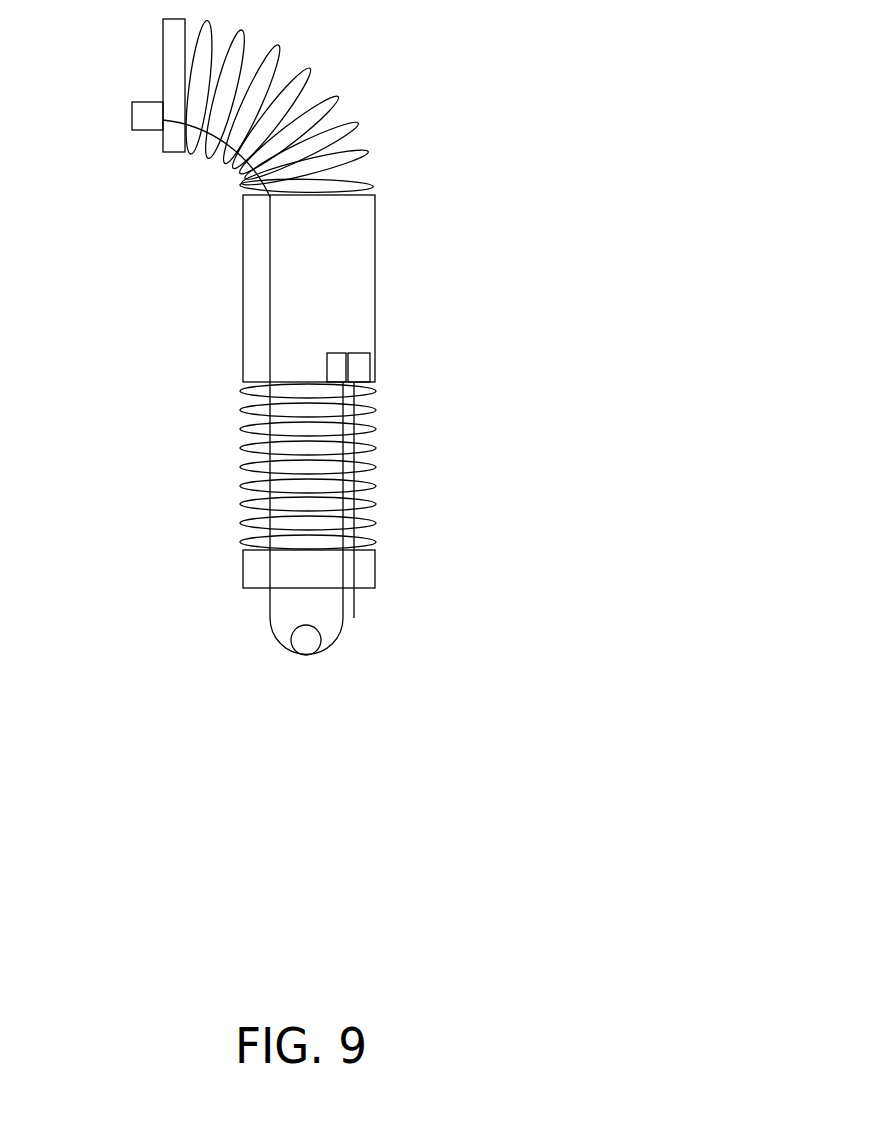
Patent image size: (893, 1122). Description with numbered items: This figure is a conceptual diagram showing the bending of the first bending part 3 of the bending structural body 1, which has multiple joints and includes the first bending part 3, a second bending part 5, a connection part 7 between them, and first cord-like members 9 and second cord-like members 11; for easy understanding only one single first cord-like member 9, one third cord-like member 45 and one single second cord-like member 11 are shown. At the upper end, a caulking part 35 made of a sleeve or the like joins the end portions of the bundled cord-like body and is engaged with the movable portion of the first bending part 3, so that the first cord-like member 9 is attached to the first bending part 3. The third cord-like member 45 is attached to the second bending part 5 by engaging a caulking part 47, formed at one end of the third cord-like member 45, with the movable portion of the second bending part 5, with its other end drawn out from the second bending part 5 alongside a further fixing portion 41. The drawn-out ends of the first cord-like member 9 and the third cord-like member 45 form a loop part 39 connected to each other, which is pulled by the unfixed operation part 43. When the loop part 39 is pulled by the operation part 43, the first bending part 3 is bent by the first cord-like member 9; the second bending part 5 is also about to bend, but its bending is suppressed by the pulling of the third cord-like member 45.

The bending structural body 1 is at (453, 67).
The first bending part 3 is at (373, 150).
The second bending part 5 is at (380, 458).
The connection part 7 is at (376, 228).
The first cord-like member 9 is at (268, 252).
The second cord-like member 11 is at (355, 605).
The caulking part 35 is at (142, 113).
The loop part 39 is at (278, 645).
The fixing portion 41 is at (360, 363).
The operation part 43 is at (320, 640).
The third cord-like member 45 is at (345, 562).
The caulking part 47 is at (336, 360).